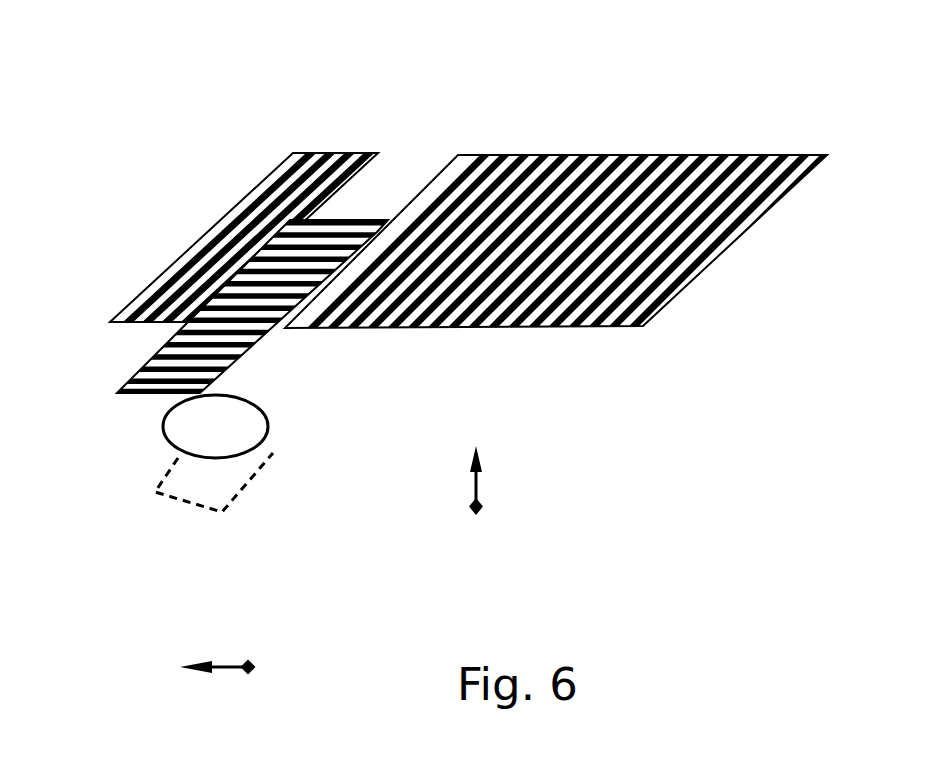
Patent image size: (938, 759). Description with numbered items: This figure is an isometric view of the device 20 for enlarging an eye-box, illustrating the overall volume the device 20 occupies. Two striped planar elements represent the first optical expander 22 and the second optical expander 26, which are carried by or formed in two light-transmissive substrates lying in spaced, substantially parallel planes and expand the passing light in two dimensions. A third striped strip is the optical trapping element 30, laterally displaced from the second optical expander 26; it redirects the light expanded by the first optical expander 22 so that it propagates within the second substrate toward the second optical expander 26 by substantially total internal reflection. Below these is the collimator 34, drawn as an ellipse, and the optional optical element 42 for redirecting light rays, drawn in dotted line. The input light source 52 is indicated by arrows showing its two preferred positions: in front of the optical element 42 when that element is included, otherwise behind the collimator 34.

The device 20 is at (490, 60).
The second optical expander 26 is at (732, 173).
The optical trapping element 30 is at (277, 169).
The first optical expander 22 is at (137, 373).
The collimator 34 is at (178, 427).
The optical element 42 is at (177, 490).
The input light source 52 is at (212, 652).